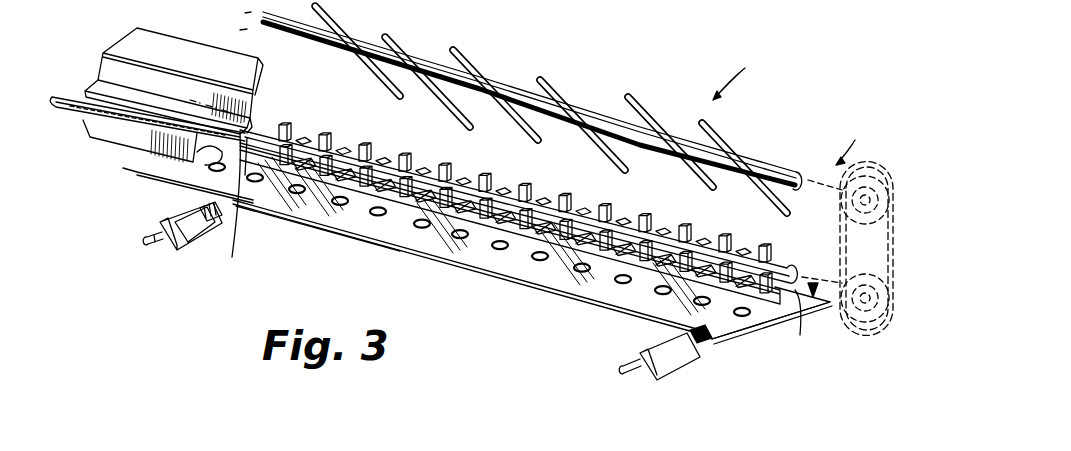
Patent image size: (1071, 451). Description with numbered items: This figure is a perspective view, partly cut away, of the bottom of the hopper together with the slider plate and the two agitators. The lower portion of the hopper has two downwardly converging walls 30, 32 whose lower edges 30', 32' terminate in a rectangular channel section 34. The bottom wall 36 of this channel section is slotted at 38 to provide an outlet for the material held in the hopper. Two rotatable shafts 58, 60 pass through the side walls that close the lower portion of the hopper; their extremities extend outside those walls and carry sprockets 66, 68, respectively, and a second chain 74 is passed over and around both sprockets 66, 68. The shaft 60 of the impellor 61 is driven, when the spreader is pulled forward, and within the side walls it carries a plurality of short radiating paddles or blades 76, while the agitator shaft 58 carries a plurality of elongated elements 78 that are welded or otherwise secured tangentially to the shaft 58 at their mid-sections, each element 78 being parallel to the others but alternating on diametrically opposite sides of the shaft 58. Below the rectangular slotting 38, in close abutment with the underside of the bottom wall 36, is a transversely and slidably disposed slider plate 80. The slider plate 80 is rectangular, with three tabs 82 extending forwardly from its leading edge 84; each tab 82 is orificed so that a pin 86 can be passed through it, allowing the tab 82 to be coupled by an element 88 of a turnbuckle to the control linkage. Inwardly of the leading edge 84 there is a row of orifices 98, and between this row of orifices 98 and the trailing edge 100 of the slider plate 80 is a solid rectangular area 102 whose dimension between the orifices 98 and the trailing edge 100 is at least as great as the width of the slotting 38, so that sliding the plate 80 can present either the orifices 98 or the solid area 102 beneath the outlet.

The downwardly converging wall 30 is at (180, 64).
The lower edge of wall 30' is at (283, 103).
The downwardly converging wall 32 is at (146, 129).
The lower edge of wall 32' is at (149, 162).
The rectangular channel section 34 is at (137, 82).
The bottom wall 36 is at (232, 200).
The slotting 38 is at (210, 173).
The rotatable shaft 58 is at (777, 163).
The rotatable shaft 60 is at (787, 268).
The impellor 61 is at (535, 174).
The sprocket 66 is at (877, 172).
The sprocket 68 is at (890, 263).
The second chain 74 is at (885, 220).
The paddles or blades 76 is at (440, 168).
The elongated elements 78 is at (465, 50).
The slider plate 80 is at (375, 248).
The tab 82 is at (213, 210).
The leading edge 84 is at (270, 212).
The pin 86 is at (677, 335).
The turnbuckle element 88 is at (157, 243).
The orifices 98 is at (367, 207).
The trailing edge 100 is at (774, 326).
The solid rectangular area 102 is at (500, 223).